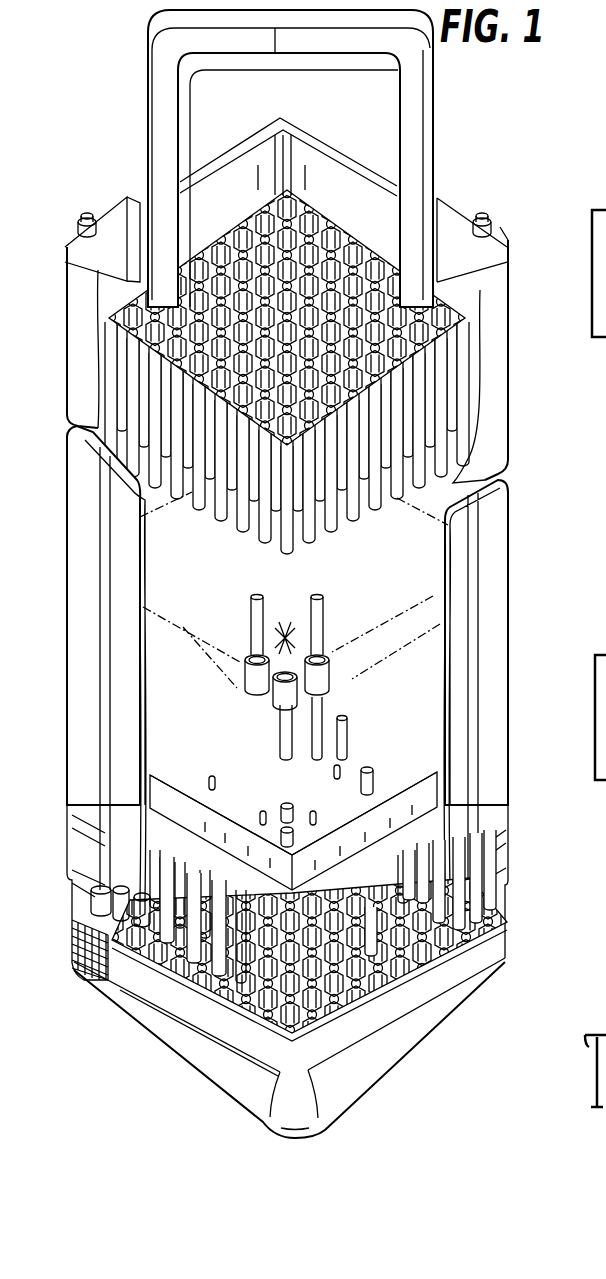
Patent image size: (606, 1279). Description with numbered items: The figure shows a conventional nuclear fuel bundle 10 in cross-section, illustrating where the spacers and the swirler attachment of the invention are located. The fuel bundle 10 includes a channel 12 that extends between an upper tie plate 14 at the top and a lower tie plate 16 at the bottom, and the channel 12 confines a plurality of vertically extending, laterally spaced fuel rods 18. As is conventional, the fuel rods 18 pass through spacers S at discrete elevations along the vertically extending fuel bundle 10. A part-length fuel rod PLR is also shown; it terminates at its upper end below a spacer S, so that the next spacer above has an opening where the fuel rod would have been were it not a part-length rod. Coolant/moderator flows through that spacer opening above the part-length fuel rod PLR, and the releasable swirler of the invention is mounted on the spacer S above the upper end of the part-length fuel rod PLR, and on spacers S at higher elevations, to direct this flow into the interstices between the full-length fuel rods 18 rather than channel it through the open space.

The nuclear fuel bundle 10 is at (284, 574).
The channel 12 is at (82, 492).
The upper tie plate 14 is at (135, 385).
The lower tie plate 16 is at (165, 990).
The fuel rods 18 is at (322, 535).
The spacer S is at (165, 635).
The part-length fuel rod PLR is at (285, 800).